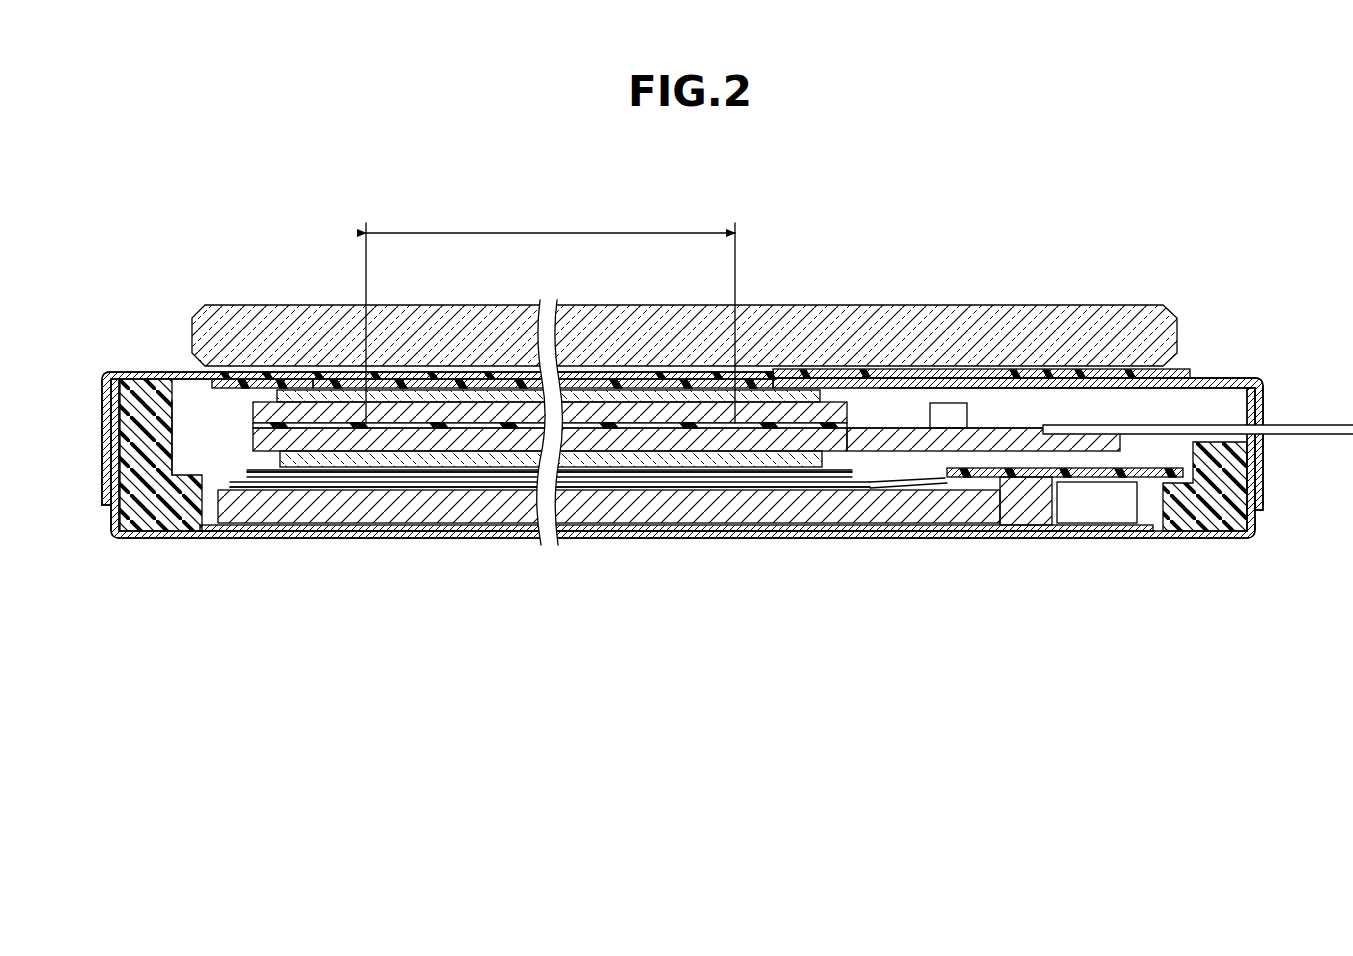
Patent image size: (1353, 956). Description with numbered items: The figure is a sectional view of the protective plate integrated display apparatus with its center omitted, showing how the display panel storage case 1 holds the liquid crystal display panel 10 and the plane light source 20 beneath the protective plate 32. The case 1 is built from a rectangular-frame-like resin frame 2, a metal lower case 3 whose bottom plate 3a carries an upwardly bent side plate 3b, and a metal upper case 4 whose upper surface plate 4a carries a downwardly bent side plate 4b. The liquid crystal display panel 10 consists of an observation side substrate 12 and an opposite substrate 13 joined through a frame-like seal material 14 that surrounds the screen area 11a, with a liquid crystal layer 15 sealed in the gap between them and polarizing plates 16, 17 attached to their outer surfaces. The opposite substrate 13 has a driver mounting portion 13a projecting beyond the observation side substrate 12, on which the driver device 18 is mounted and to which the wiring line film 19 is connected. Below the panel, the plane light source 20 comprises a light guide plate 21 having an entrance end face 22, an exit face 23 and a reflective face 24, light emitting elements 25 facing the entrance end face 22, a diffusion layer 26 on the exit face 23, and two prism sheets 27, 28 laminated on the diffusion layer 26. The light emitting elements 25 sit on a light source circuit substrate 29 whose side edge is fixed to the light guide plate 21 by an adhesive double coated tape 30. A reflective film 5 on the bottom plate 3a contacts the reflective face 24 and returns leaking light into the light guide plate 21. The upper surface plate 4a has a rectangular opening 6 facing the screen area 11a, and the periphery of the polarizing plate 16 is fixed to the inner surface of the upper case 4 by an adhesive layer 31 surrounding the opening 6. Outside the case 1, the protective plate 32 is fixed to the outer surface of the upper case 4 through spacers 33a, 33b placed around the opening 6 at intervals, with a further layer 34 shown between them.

The display panel storage case 1 is at (117, 542).
The resin frame 2 is at (157, 526).
The lower case 3 is at (245, 541).
The bottom plate 3a is at (392, 534).
The side plate 3b is at (115, 512).
The upper case 4 is at (150, 371).
The upper surface plate 4a is at (1205, 384).
The side plate 4b is at (100, 400).
The reflective film 5 is at (930, 529).
The rectangular opening 6 is at (742, 422).
The display panel 10 is at (880, 426).
The screen area 11a is at (550, 233).
The observation side substrate 12 is at (338, 418).
The opposite substrate 13 is at (346, 462).
The driver mounting portion 13a is at (1025, 445).
The seal material 14 is at (808, 425).
The liquid crystal layer 15 is at (596, 440).
The polarizing plate 16 is at (422, 395).
The polarizing plate 17 is at (440, 470).
The driver device 18 is at (955, 412).
The wiring line film 19 is at (1300, 428).
The plane light source 20 is at (232, 475).
The light guide plate 21 is at (582, 508).
The entrance end face 22 is at (1070, 497).
The exit face 23 is at (513, 480).
The reflective face 24 is at (270, 522).
The light emitting elements 25 is at (1150, 500).
The diffusion layer 26 is at (872, 492).
The prism sheet 27 is at (803, 486).
The prism sheet 28 is at (735, 482).
The light source circuit substrate 29 is at (1123, 510).
The adhesive double coated tape 30 is at (1000, 478).
The adhesive layer 31 is at (236, 388).
The protective plate 32 is at (1142, 335).
The spacer 33a is at (250, 378).
The spacer 33b is at (1082, 370).
The adhesive layer 34 is at (485, 376).